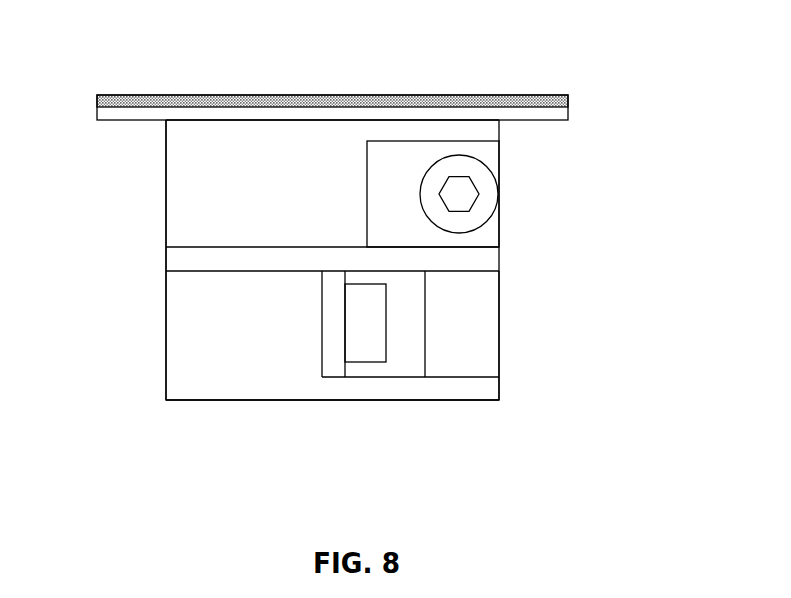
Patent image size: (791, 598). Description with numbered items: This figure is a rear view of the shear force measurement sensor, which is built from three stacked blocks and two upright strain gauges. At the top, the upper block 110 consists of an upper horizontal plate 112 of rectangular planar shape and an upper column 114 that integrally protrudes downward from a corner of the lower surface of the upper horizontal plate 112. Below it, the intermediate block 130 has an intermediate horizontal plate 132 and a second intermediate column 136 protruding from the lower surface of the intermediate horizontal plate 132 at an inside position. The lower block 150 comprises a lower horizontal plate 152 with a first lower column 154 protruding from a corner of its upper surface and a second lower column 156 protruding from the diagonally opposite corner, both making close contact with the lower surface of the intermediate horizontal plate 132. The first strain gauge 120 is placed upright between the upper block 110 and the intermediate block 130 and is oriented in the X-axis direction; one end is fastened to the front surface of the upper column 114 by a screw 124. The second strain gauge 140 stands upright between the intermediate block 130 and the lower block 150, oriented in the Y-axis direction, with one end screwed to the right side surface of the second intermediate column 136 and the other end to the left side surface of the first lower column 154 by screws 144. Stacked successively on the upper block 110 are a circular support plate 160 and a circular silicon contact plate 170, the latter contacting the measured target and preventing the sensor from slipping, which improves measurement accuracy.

The upper block 110 is at (164, 202).
The upper horizontal plate 112 is at (452, 132).
The upper column 114 is at (185, 175).
The first strain gauge 120 is at (493, 150).
The screw 124 is at (492, 190).
The intermediate block 130 is at (180, 259).
The intermediate horizontal plate 132 is at (210, 260).
The second intermediate column 136 is at (415, 352).
The second strain gauge 140 is at (333, 357).
The screw 144 is at (365, 348).
The lower block 150 is at (223, 401).
The lower horizontal plate 152 is at (433, 392).
The first lower column 154 is at (192, 367).
The second lower column 156 is at (472, 322).
The circular support plate 160 is at (558, 120).
The circular silicon contact plate 170 is at (558, 94).